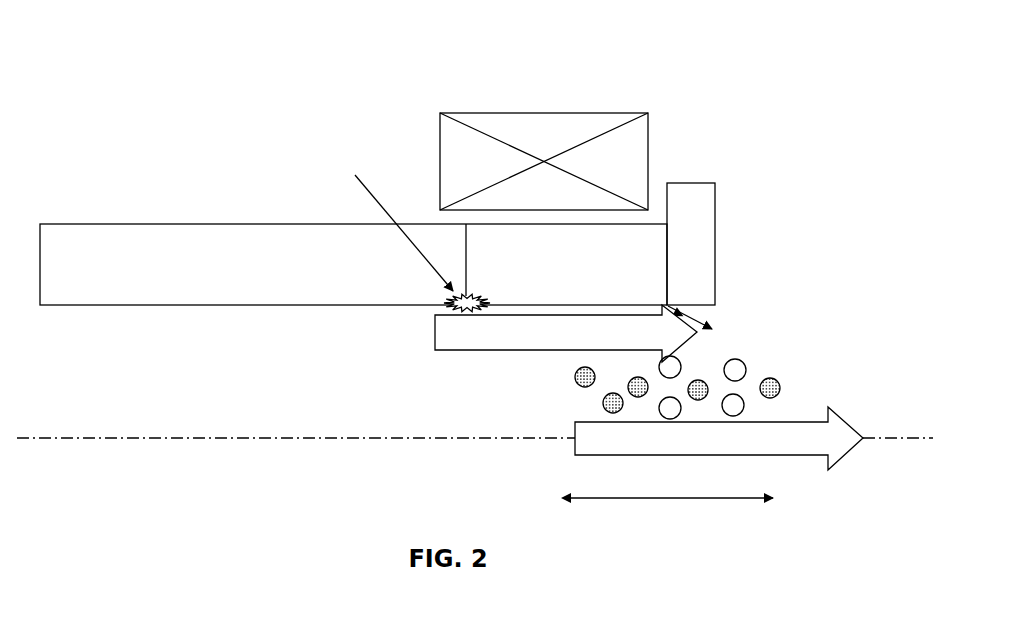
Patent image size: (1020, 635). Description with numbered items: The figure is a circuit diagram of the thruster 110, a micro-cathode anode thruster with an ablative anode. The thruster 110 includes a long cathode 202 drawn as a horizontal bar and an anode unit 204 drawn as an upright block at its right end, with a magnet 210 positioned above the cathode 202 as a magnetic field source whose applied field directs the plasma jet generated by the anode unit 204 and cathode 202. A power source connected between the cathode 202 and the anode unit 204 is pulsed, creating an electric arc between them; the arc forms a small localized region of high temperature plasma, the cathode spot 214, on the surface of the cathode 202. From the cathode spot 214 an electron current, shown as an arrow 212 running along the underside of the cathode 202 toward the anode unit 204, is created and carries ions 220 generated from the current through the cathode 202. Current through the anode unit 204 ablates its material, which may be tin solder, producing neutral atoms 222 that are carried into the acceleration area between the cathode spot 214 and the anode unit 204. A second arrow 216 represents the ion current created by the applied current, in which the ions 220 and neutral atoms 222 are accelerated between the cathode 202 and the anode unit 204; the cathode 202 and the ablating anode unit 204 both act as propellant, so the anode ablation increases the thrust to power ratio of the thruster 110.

The thruster 110 is at (235, 44).
The cathode 202 is at (227, 223).
The anode unit 204 is at (716, 243).
The magnet 210 is at (600, 132).
The electron current 212 is at (498, 352).
The cathode spot 214 is at (446, 306).
The ion current 216 is at (838, 416).
The ions 220 is at (579, 385).
The neutral atoms 222 is at (747, 370).